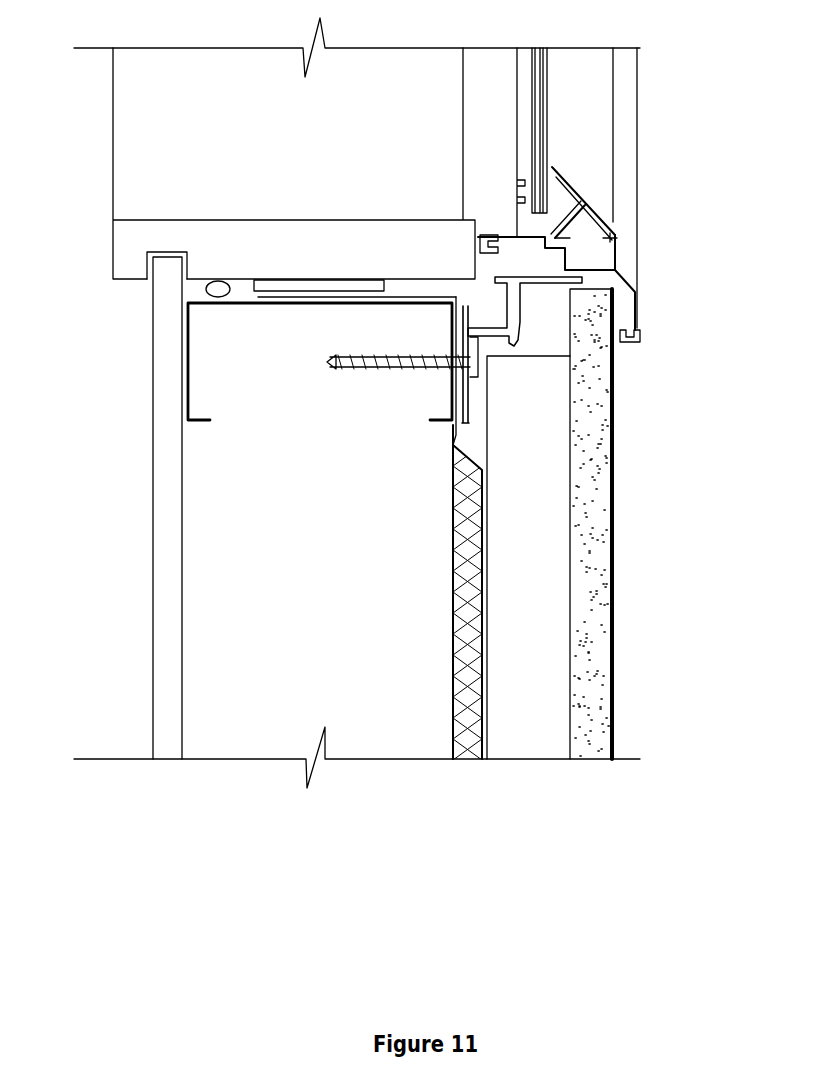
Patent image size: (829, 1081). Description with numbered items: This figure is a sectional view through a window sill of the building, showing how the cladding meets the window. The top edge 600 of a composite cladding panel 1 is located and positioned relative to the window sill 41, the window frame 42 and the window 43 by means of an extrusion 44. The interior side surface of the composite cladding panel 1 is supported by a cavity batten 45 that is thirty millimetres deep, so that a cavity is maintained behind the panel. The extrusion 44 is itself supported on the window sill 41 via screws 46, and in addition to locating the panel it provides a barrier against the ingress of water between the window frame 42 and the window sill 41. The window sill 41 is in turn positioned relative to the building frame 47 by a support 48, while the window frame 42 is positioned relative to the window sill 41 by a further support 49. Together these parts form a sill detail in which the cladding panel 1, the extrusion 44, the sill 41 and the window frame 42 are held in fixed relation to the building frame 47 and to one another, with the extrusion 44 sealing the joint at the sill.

The composite cladding panel 1 is at (615, 403).
The window sill 41 is at (213, 379).
The window frame 42 is at (642, 328).
The window 43 is at (548, 120).
The extrusion 44 is at (537, 279).
The cavity batten 45 is at (513, 553).
The screws 46 is at (362, 370).
The building frame 47 is at (380, 715).
The support 48 is at (152, 643).
The support 49 is at (130, 257).
The top edge 600 is at (593, 307).